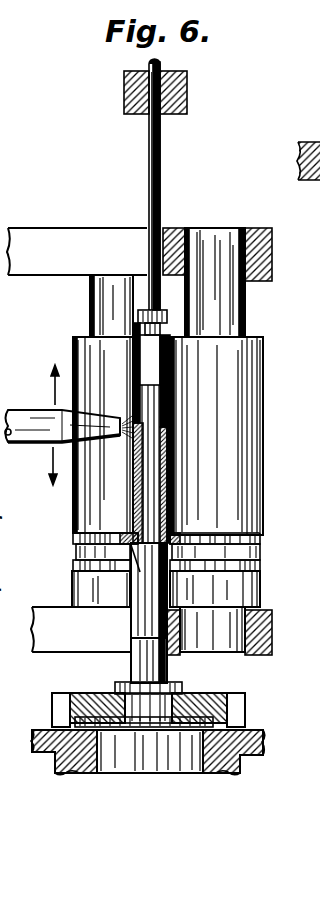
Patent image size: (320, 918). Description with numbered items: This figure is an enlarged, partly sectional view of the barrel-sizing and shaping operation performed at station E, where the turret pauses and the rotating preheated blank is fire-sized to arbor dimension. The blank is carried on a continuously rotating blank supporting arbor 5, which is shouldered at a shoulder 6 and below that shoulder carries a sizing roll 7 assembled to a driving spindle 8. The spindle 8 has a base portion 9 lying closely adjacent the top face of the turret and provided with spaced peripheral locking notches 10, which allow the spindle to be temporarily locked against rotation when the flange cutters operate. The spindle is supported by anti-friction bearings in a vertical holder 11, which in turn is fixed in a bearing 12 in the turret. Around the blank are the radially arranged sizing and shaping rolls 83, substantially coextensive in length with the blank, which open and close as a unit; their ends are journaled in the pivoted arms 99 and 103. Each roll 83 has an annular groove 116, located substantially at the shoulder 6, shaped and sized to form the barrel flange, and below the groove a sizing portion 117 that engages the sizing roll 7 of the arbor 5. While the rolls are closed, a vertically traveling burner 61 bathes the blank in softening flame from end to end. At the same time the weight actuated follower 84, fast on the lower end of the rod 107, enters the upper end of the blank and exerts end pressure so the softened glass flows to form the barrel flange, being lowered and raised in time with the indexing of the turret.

The barrel-sizing station E is at (122, 81).
The rod 107 is at (161, 180).
The pivoted arm 99 is at (85, 233).
The pivoted arm 103 is at (268, 228).
The weight actuated follower 84 is at (170, 326).
The sizing and shaping rolls 83 is at (88, 357).
The vertically traveling burner 61 is at (37, 432).
The blank supporting arbor 5 is at (140, 484).
The annular grooves 116 is at (75, 543).
The sizing portions 117 is at (78, 588).
The shoulder 6 is at (133, 572).
The sizing roll 7 is at (142, 612).
The driving spindle 8 is at (168, 667).
The base portion 9 is at (205, 702).
The locking notches 10 is at (60, 706).
The vertical holder 11 is at (140, 750).
The bearing 12 is at (240, 760).